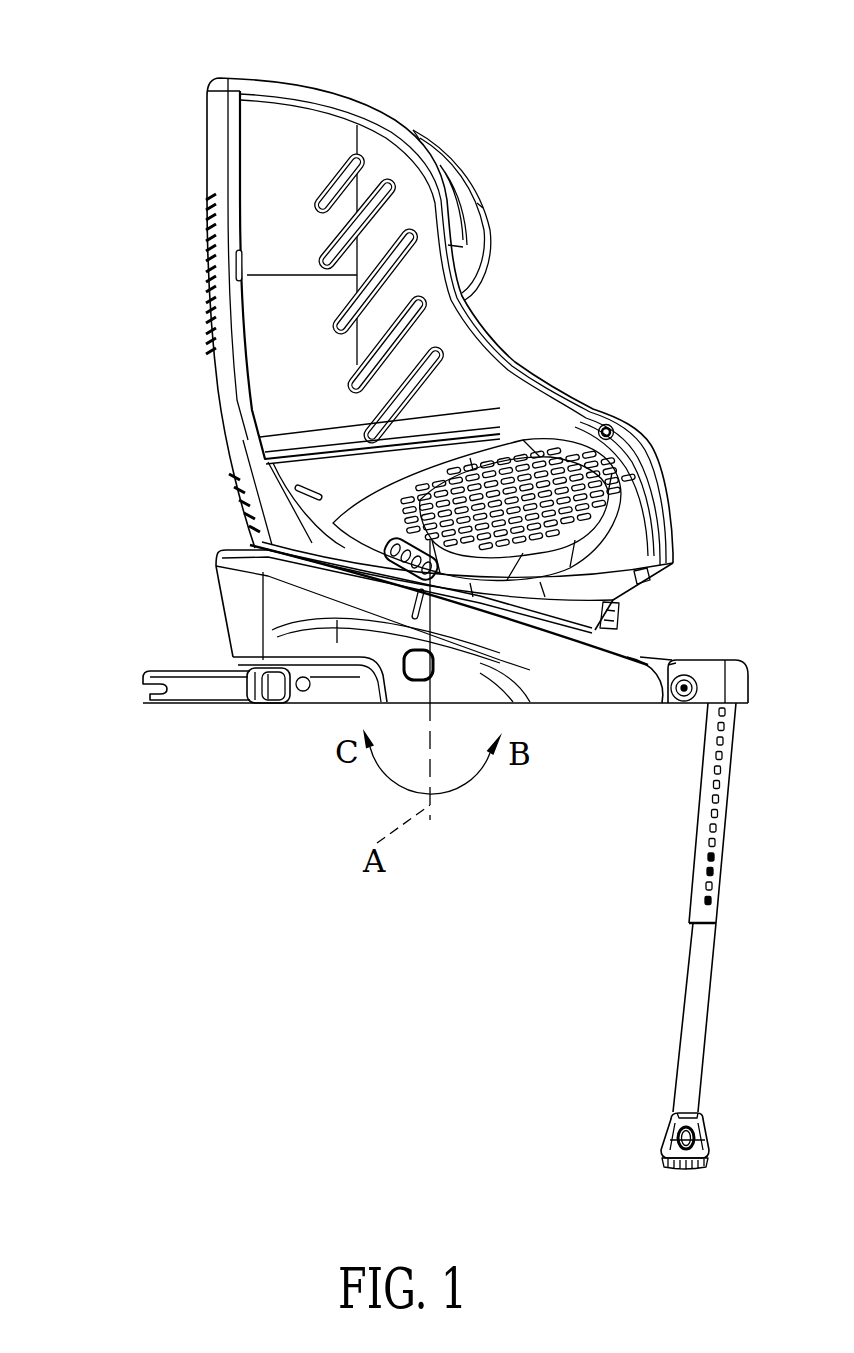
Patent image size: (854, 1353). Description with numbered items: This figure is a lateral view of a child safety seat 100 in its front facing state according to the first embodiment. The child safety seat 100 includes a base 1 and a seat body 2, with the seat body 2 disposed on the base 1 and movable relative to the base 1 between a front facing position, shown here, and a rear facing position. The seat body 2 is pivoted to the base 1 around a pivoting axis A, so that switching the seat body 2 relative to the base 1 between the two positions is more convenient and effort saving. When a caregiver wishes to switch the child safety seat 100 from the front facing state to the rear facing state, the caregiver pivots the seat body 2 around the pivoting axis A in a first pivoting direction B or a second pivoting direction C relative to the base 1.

The child safety seat 100 is at (113, 50).
The base 1 is at (290, 607).
The seat body 2 is at (293, 377).